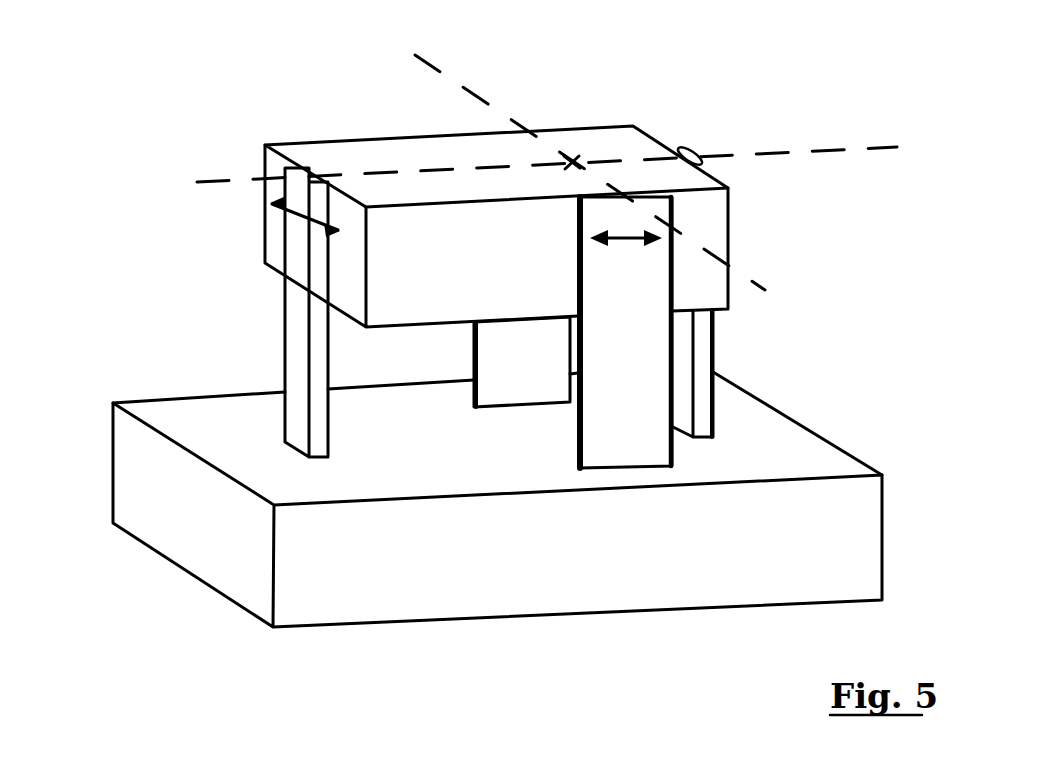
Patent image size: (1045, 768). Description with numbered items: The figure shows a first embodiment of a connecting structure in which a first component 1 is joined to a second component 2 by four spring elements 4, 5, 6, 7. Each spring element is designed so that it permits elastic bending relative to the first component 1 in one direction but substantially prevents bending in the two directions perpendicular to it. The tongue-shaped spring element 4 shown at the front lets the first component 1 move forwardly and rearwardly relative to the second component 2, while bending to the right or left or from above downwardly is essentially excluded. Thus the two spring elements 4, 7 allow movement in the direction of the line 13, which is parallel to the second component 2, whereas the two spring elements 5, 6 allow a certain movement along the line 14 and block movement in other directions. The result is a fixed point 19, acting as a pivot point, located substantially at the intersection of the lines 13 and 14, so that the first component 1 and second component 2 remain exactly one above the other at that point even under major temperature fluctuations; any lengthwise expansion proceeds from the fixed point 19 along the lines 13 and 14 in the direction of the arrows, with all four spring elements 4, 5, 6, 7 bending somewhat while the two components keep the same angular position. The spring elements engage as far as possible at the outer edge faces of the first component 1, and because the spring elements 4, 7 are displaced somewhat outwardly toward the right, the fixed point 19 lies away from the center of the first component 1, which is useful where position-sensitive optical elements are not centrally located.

The first component 1 is at (400, 162).
The second component 2 is at (348, 607).
The spring element 4 is at (617, 415).
The spring element 5 is at (287, 318).
The spring element 6 is at (707, 357).
The spring element 7 is at (503, 355).
The line 13 is at (483, 102).
The line 14 is at (805, 150).
The fixed point 19 is at (573, 162).